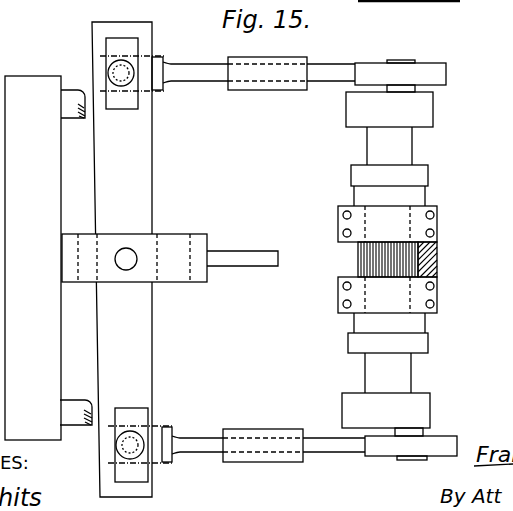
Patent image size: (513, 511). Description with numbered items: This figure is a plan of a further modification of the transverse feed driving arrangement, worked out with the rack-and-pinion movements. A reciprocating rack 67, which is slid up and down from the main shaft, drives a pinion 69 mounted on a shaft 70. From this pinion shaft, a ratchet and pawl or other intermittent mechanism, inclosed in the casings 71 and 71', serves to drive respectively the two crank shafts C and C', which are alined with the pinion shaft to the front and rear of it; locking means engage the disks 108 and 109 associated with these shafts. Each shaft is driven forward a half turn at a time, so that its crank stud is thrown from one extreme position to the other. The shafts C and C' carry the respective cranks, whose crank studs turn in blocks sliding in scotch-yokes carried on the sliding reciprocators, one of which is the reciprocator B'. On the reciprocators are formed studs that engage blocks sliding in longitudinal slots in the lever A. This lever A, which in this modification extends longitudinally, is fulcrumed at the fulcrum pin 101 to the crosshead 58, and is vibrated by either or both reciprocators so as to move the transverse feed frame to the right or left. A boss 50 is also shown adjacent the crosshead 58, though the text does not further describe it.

The lever A is at (132, 259).
The reciprocator B' is at (264, 259).
The crank shaft C is at (396, 112).
The crank shaft C' is at (399, 406).
The boss 50 is at (73, 96).
The crosshead 58 is at (186, 226).
The rack 67 is at (437, 258).
The pinion 69 is at (358, 258).
The pinion shaft 70 is at (387, 224).
The casing 71 is at (410, 197).
The casing 71' is at (412, 324).
The fulcrum pin 101 is at (131, 249).
The disk 108 is at (417, 179).
The disk 109 is at (423, 351).